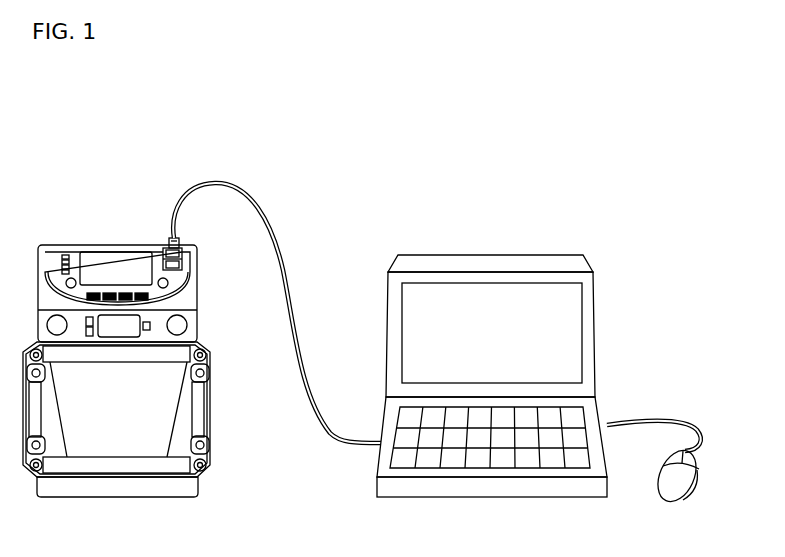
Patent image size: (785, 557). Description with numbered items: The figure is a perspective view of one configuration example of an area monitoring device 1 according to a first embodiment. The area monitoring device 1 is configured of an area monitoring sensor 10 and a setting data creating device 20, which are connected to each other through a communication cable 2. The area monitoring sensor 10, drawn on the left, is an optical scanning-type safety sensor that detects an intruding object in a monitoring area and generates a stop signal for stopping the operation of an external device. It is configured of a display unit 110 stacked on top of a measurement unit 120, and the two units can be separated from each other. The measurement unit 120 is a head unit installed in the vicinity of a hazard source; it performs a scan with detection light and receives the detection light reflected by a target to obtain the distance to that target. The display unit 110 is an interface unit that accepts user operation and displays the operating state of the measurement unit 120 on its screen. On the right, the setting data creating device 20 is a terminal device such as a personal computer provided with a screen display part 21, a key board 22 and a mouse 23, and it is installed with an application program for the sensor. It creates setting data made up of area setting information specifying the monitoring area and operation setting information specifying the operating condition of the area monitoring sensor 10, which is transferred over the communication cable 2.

The area monitoring device 1 is at (740, 103).
The area monitoring sensor 10 is at (194, 240).
The display unit 110 is at (197, 297).
The measurement unit 120 is at (208, 355).
The communication cable 2 is at (285, 258).
The setting data creating device 20 is at (597, 283).
The screen display part 21 is at (583, 310).
The key board 22 is at (553, 428).
The mouse 23 is at (700, 467).